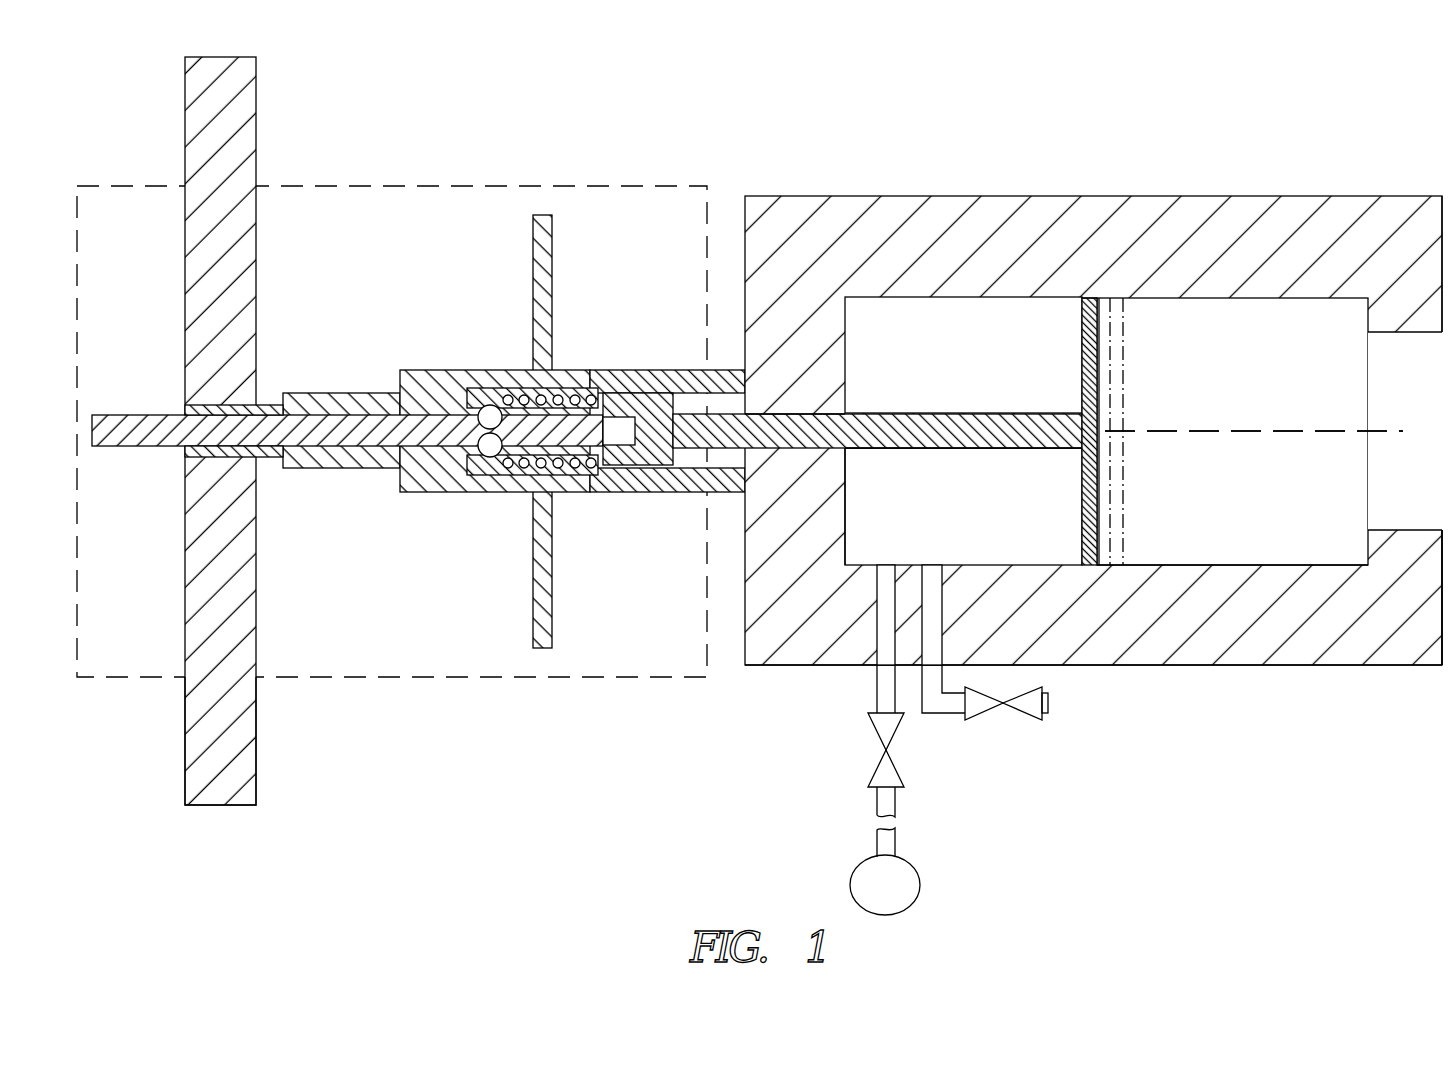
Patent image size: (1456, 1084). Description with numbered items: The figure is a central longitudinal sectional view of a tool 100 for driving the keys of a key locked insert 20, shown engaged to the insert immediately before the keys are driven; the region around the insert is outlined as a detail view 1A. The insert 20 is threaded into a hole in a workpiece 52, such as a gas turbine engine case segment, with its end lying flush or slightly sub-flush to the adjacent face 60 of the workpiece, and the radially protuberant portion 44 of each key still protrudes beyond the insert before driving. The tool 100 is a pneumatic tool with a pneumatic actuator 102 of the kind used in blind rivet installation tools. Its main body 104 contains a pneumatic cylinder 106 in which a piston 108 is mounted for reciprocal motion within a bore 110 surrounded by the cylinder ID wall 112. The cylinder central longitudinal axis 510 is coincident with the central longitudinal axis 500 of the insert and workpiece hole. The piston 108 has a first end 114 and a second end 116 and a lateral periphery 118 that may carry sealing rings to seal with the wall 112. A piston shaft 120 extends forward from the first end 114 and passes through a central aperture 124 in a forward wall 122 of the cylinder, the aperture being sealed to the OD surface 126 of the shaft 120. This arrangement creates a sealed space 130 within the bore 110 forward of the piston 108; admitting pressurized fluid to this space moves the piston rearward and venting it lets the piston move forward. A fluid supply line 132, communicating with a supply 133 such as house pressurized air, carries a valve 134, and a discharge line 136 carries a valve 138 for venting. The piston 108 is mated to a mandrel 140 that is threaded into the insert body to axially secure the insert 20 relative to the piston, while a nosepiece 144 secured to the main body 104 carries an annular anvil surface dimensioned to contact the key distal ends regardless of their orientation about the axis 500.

The detail view region 1A is at (623, 185).
The key locked insert 20 is at (250, 396).
The radially protuberant portion 44 is at (268, 460).
The workpiece 52 is at (268, 169).
The face of the workpiece 60 is at (257, 753).
The tool 100 is at (942, 113).
The pneumatic actuator 102 is at (1213, 692).
The main body 104 is at (745, 183).
The pneumatic cylinder 106 is at (1335, 648).
The piston 108 is at (1090, 512).
The bore 110 is at (1353, 476).
The cylinder ID wall 112 is at (1240, 562).
The first end of the piston 114 is at (1080, 488).
The second end of the piston 116 is at (1097, 470).
The lateral periphery 118 is at (1090, 293).
The piston shaft 120 is at (1000, 431).
The forward wall 122 is at (808, 513).
The central aperture 124 is at (806, 414).
The OD surface of the shaft 126 is at (888, 450).
The sealed space 130 is at (983, 336).
The fluid supply line 132 is at (878, 693).
The supply 133 is at (863, 899).
The valve 134 is at (860, 746).
The discharge line 136 is at (953, 706).
The valve 138 is at (1005, 730).
The mandrel 140 is at (353, 426).
The nosepiece 144 is at (392, 392).
The central longitudinal axis 500 is at (1230, 430).
The cylinder central longitudinal axis 510 is at (1254, 387).